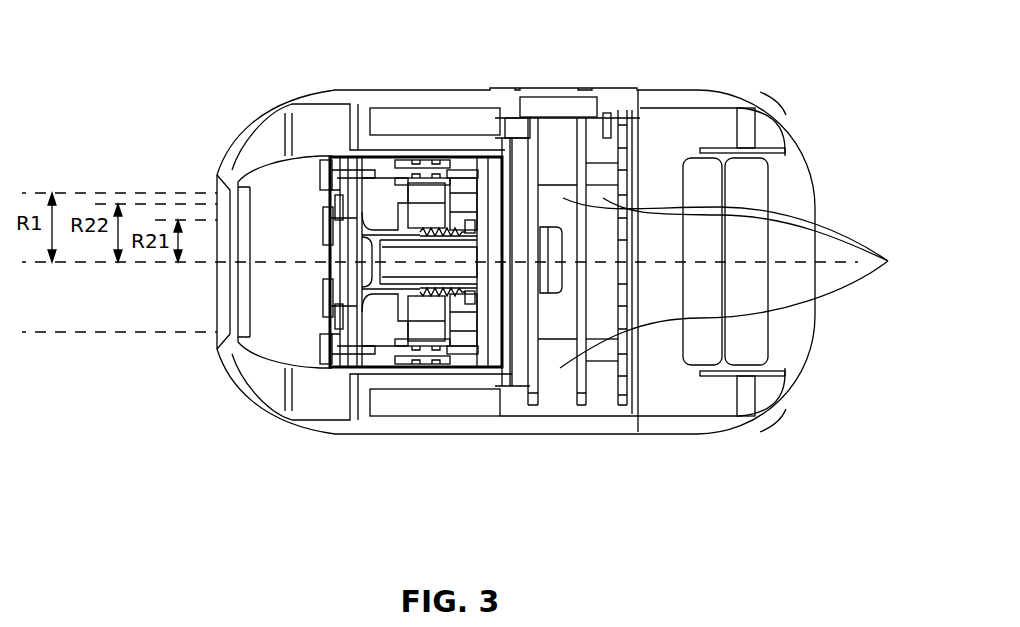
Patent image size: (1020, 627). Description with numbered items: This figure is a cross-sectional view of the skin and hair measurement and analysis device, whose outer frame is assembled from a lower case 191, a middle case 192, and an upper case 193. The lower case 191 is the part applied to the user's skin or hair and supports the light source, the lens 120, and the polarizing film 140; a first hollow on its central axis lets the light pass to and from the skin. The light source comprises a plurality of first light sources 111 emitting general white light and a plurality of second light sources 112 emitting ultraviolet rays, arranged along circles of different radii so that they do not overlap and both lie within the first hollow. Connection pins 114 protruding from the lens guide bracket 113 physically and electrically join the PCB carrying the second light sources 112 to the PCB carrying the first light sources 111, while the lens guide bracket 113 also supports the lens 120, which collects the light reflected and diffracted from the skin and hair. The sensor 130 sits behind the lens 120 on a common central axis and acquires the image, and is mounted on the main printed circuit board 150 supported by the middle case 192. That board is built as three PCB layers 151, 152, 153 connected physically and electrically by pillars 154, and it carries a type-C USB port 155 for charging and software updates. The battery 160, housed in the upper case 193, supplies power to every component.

The first light source 111 is at (388, 308).
The second light source 112 is at (352, 305).
The lens guide bracket 113 is at (442, 318).
The connection pins 114 is at (430, 313).
The lens 120 is at (377, 272).
The sensor 130 is at (523, 290).
The polarizing film 140 is at (362, 192).
The main printed circuit board 150 is at (604, 324).
The first PCB layer 151 is at (535, 407).
The second PCB layer 152 is at (583, 405).
The third PCB layer 153 is at (649, 297).
The pillars 154 is at (747, 283).
The type-C USB port 155 is at (547, 230).
The battery 160 is at (745, 173).
The lower case 191 is at (260, 123).
The middle case 192 is at (425, 98).
The upper case 193 is at (797, 168).